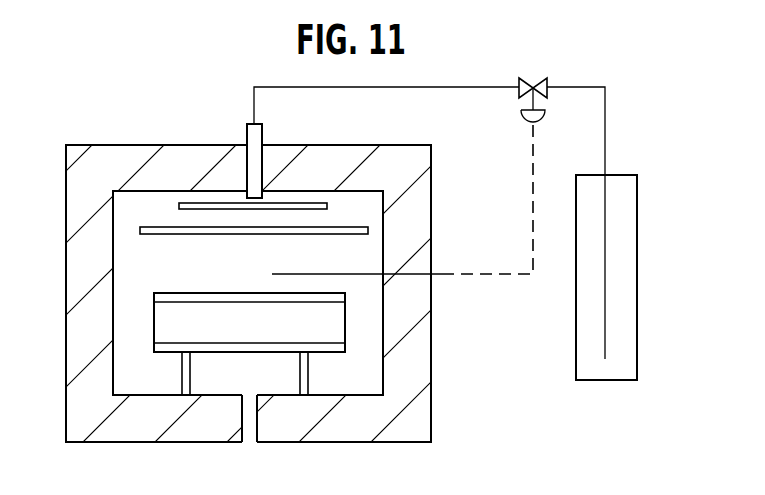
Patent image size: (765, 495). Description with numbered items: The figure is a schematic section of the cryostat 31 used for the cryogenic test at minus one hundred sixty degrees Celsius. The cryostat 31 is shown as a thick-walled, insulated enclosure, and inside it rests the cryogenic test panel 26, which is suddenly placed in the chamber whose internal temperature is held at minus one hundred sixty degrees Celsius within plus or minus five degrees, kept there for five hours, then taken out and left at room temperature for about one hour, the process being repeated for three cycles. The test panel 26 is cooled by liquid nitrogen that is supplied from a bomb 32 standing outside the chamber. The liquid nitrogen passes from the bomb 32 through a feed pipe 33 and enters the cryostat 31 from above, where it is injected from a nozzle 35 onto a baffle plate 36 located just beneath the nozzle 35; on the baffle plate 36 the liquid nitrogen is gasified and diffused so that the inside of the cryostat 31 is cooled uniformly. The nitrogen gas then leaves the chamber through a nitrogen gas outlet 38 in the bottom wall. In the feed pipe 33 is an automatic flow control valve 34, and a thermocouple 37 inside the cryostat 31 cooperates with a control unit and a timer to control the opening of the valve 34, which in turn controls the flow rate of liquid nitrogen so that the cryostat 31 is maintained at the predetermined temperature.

The cryogenic test panel 26 is at (179, 292).
The cryostat 31 is at (133, 146).
The bomb 32 is at (638, 266).
The feed pipe 33 is at (606, 119).
The automatic flow control valve 34 is at (527, 77).
The nozzle 35 is at (180, 208).
The baffle plate 36 is at (283, 240).
The thermocouple 37 is at (350, 274).
The nitrogen gas outlet 38 is at (244, 430).